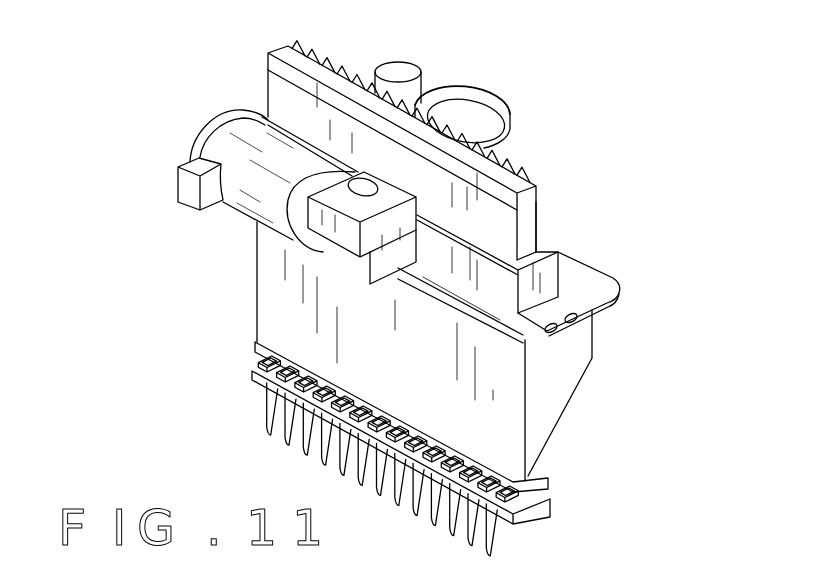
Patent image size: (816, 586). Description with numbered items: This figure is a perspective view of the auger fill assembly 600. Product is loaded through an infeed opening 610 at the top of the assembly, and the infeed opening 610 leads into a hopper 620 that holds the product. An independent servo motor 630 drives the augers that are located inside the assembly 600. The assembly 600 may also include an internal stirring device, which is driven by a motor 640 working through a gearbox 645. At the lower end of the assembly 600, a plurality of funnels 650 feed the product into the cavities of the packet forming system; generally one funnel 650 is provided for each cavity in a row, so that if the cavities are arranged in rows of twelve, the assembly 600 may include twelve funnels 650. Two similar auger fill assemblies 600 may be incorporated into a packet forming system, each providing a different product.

The auger fill assembly 600 is at (558, 153).
The infeed opening 610 is at (500, 87).
The hopper 620 is at (548, 390).
The independent servo motor 630 is at (287, 53).
The motor 640 is at (237, 147).
The gearbox 645 is at (325, 227).
The funnels 650 is at (335, 473).